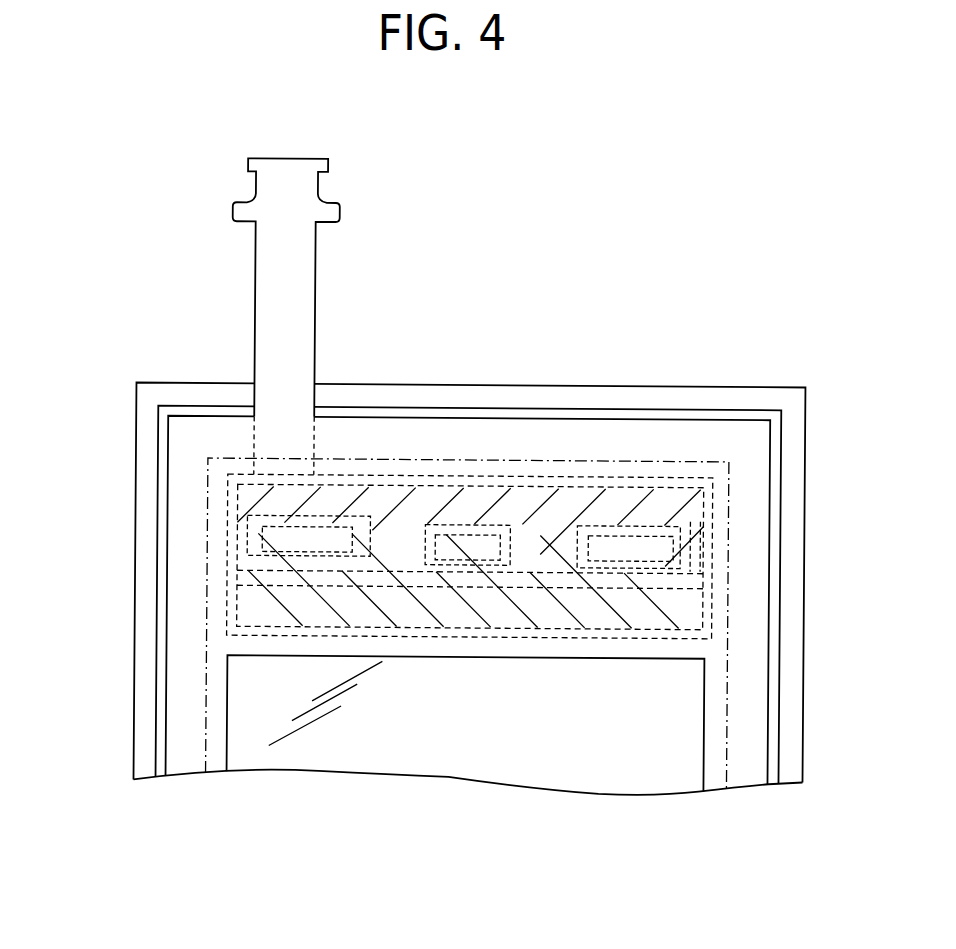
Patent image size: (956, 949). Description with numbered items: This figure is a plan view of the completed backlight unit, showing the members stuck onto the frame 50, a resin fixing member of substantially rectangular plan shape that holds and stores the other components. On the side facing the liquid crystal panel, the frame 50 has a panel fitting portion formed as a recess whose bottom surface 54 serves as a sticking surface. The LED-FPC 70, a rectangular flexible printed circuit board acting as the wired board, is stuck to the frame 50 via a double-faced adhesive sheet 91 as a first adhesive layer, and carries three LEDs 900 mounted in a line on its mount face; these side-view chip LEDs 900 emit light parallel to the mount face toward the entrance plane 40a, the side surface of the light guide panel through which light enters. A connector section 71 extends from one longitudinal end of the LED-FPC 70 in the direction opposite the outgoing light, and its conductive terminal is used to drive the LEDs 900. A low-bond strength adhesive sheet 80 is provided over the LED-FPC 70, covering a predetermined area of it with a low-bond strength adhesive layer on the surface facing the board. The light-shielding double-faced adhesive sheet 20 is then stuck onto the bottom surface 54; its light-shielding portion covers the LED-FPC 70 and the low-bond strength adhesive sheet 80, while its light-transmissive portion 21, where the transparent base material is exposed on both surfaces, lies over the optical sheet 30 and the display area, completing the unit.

The frame 50 is at (768, 386).
The bottom surface 54 is at (162, 628).
The light-shielding double-faced adhesive sheet 20 is at (168, 470).
The connector section 71 is at (257, 262).
The entrance plane 40a is at (713, 580).
The LED-FPC 70 is at (400, 478).
The double-faced adhesive sheet 91 is at (521, 478).
The LEDs 900 is at (600, 522).
The low-bond strength adhesive sheet 80 is at (597, 633).
The optical sheet 30 is at (487, 745).
The light-transmissive portion 21 is at (267, 709).